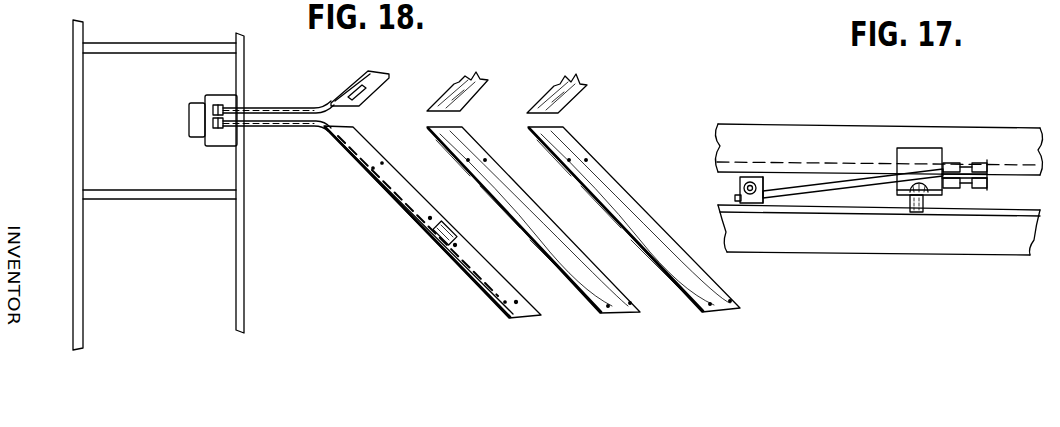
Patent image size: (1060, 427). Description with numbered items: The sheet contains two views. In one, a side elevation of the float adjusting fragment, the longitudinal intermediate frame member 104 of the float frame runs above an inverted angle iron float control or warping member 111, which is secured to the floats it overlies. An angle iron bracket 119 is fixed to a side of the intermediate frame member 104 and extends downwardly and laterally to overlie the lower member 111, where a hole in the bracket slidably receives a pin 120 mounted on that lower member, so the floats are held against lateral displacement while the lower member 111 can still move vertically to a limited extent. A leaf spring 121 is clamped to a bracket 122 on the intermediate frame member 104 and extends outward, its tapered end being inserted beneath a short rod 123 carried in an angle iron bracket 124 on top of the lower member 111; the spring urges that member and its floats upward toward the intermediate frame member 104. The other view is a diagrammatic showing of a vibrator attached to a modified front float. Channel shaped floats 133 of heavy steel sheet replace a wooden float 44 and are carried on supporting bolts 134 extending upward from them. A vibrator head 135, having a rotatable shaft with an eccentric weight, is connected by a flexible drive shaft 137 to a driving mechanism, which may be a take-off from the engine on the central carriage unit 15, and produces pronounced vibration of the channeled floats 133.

In FIG. 18, the central carriage unit 15 is at (246, 286).
In FIG. 18, the flexible drive shaft 137 is at (288, 127).
In FIG. 18, the channel shaped float 133 is at (363, 73).
In FIG. 18, the vibrator head 135 is at (433, 230).
In FIG. 18, the supporting bolt 134 is at (516, 302).
In FIG. 18, the float 44 is at (555, 86).
In FIG. 17, the intermediate frame member 104 is at (832, 137).
In FIG. 17, the float control or warping member 111 is at (870, 243).
In FIG. 17, the short rod 123 is at (742, 177).
In FIG. 17, the angle iron bracket 124 is at (763, 174).
In FIG. 17, the leaf spring 121 is at (815, 188).
In FIG. 17, the angle iron bracket 119 is at (923, 148).
In FIG. 17, the pin 120 is at (928, 200).
In FIG. 17, the bracket 122 is at (986, 165).